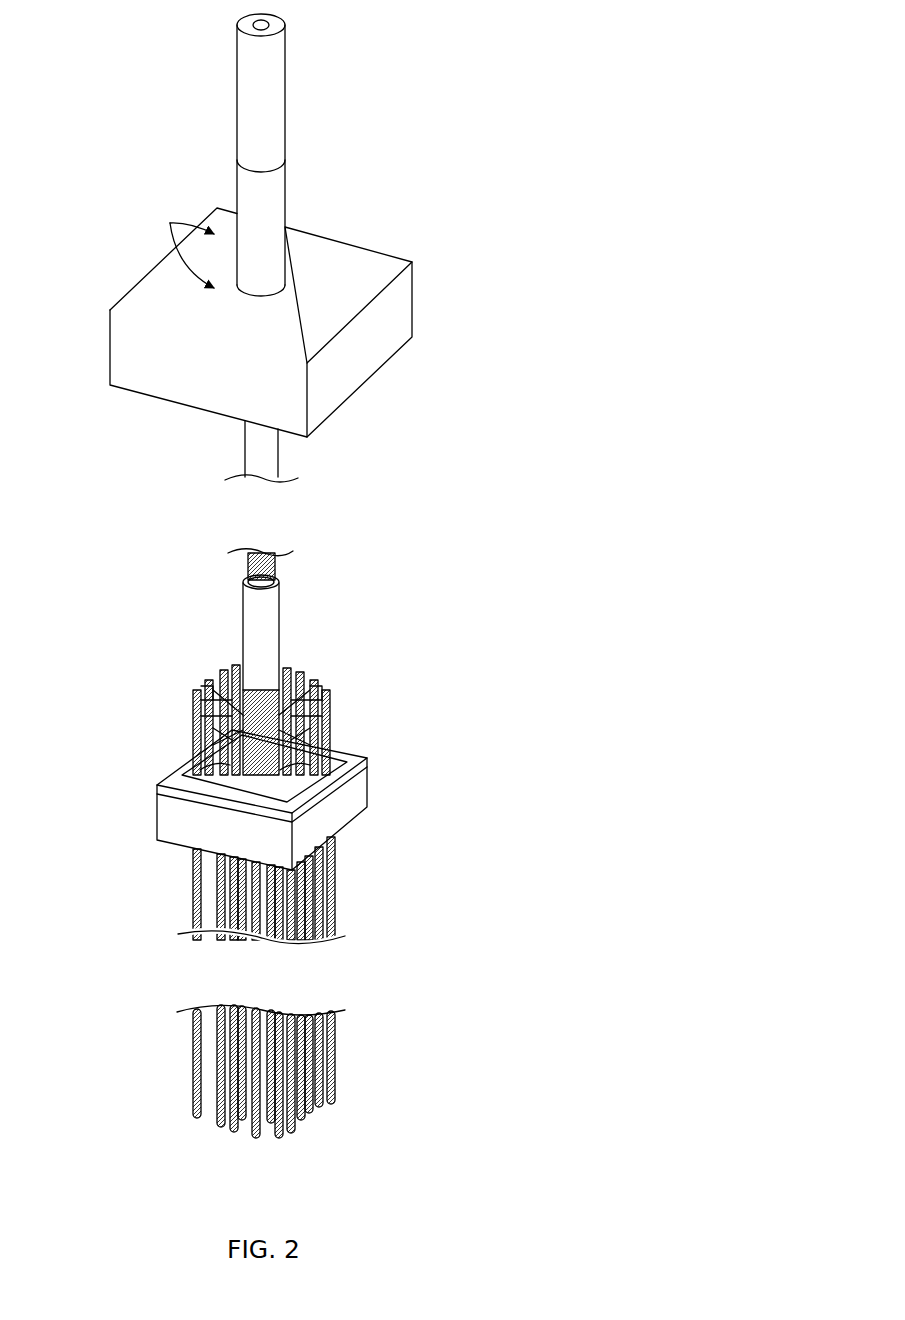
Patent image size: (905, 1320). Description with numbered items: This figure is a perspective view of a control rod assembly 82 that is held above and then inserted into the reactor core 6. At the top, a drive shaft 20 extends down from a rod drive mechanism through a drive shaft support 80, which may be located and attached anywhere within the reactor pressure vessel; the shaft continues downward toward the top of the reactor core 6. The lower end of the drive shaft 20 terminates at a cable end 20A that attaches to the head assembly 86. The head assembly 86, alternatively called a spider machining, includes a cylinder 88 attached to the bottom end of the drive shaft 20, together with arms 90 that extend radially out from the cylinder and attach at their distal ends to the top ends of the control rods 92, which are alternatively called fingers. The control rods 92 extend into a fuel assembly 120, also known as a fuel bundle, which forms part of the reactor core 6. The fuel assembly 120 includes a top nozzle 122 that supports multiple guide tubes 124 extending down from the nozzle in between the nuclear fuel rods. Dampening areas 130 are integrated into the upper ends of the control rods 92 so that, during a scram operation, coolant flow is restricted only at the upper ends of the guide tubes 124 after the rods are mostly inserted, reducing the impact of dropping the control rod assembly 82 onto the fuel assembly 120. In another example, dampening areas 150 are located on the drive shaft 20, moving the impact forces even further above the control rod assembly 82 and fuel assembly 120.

The drive shaft 20 is at (276, 191).
The drive shaft support 80 is at (392, 316).
The dampening areas 150 is at (176, 240).
The cable end 20A is at (276, 568).
The cylinder 88 is at (273, 637).
The head assembly 86 is at (232, 667).
The control rod assembly 82 is at (321, 827).
The arms 90 is at (354, 686).
The control rods 92 is at (183, 747).
The dampening areas 130 is at (222, 775).
The top nozzle 122 is at (241, 788).
The fuel assembly 120 is at (238, 825).
The guide tubes 124 is at (325, 902).
The reactor core 6 is at (412, 997).